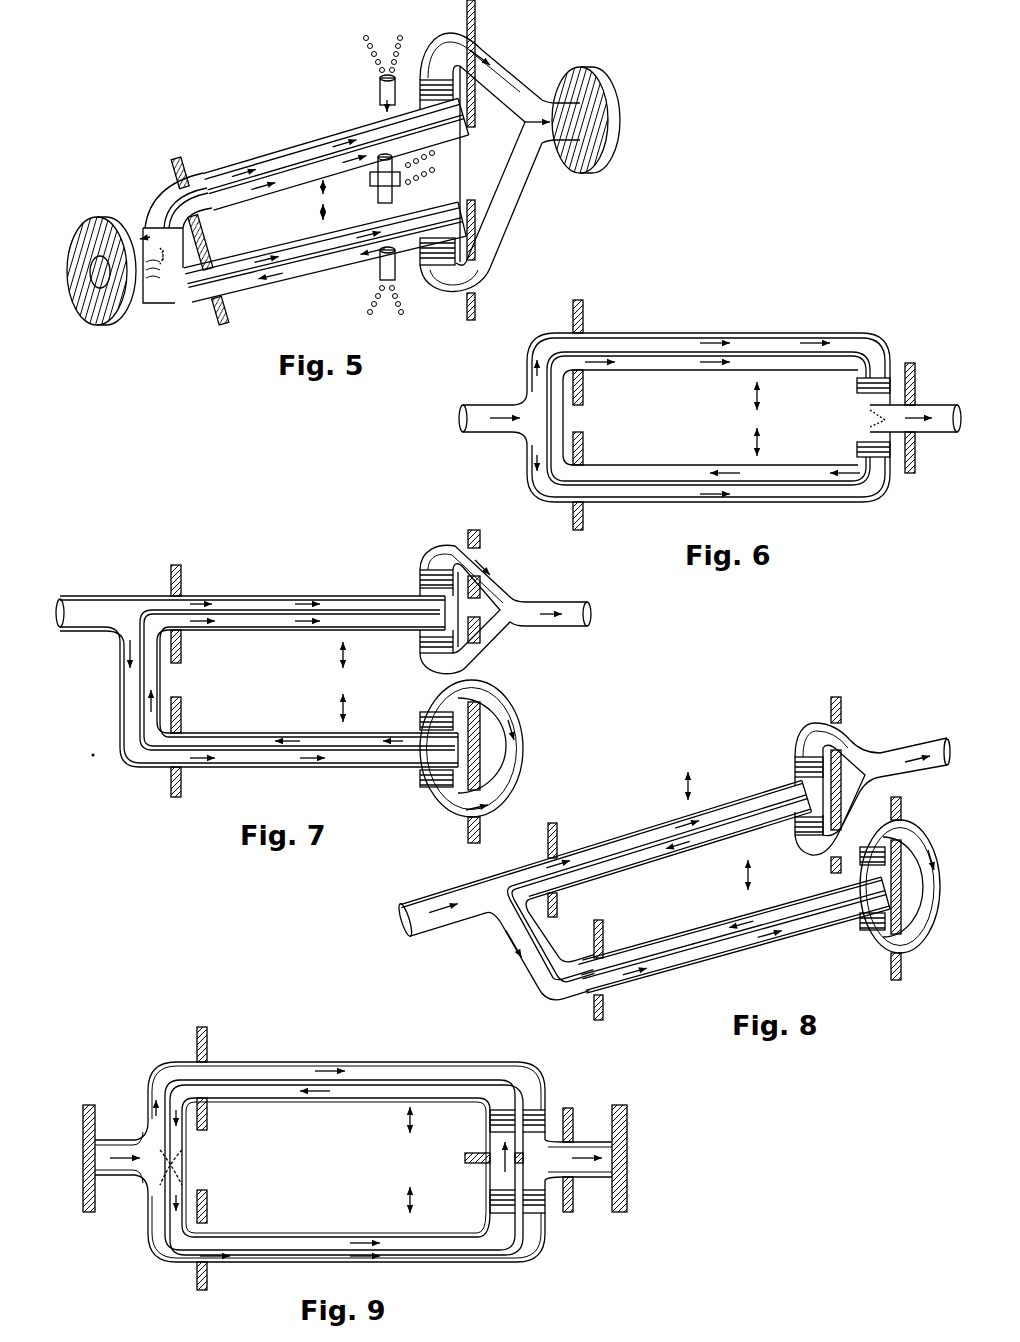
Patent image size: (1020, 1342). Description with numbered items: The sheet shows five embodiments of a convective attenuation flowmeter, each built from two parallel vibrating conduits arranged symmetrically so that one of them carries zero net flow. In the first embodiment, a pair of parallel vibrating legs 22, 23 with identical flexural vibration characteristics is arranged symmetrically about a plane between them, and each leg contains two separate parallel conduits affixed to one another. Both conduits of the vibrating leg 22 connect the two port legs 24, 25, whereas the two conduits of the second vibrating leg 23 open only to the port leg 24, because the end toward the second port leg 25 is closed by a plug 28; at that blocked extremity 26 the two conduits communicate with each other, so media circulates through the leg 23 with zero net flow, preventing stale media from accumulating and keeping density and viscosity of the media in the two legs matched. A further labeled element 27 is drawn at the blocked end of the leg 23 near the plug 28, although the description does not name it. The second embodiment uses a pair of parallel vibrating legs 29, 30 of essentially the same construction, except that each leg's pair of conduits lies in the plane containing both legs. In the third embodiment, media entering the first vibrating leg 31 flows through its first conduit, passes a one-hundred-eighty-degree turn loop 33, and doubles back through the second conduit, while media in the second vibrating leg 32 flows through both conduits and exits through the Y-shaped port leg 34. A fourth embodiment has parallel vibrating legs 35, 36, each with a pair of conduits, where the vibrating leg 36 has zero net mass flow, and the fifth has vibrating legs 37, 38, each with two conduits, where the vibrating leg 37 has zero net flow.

In FIG. 5, the vibrating leg 22 is at (273, 163).
In FIG. 5, the second vibrating leg 23 is at (286, 270).
In FIG. 5, the port leg 24 is at (136, 232).
In FIG. 5, the second port leg 25 is at (556, 92).
In FIG. 5, the blocked extremity 26 is at (452, 190).
In FIG. 5, the bellows 27 is at (456, 240).
In FIG. 5, the plug 28 is at (443, 278).
In FIG. 6, the vibrating leg 29 is at (822, 333).
In FIG. 6, the vibrating leg 30 is at (822, 502).
In FIG. 7, the first vibrating leg 31 is at (380, 767).
In FIG. 7, the second vibrating leg 32 is at (380, 595).
In FIG. 7, the 180 degree turn loop 33 is at (516, 726).
In FIG. 7, the Y-shaped port leg 34 is at (508, 644).
In FIG. 8, the vibrating leg 35 is at (632, 834).
In FIG. 8, the vibrating leg 36 is at (679, 963).
In FIG. 9, the vibrating leg 37 is at (447, 1062).
In FIG. 9, the vibrating leg 38 is at (458, 1262).